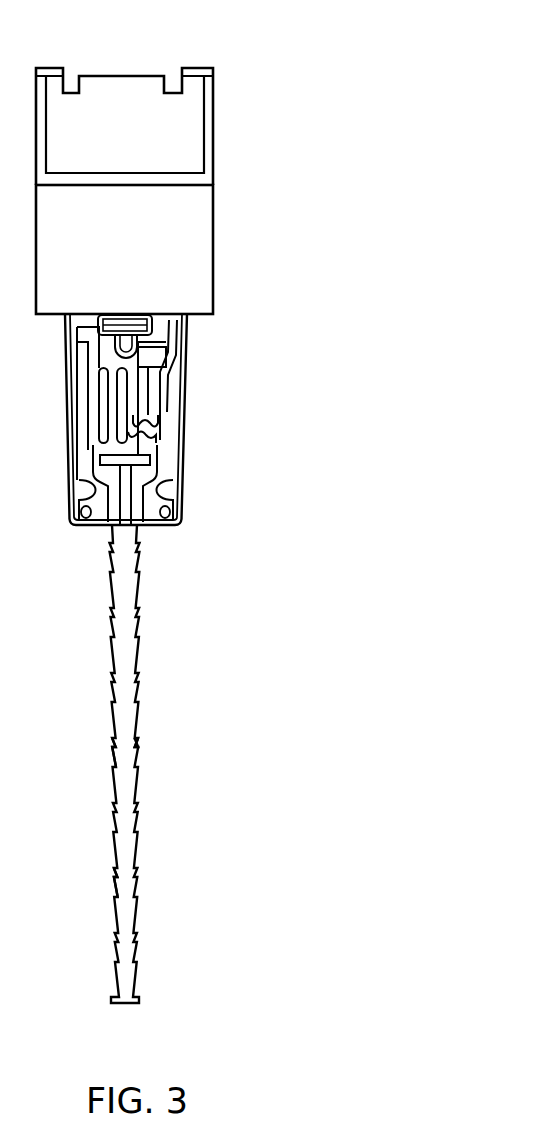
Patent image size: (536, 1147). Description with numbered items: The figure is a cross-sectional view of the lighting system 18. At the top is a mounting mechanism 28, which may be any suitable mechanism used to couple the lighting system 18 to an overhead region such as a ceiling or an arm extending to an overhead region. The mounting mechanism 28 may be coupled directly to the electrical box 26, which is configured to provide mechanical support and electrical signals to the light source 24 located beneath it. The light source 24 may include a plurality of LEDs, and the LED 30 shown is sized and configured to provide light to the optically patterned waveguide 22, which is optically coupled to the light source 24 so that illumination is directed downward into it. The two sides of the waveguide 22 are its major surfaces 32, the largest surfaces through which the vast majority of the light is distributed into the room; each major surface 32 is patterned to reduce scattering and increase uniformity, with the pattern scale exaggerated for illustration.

The lighting system 18 is at (364, 68).
The optically patterned waveguide 22 is at (125, 664).
The light source 24 is at (173, 462).
The electrical box 26 is at (187, 263).
The mounting mechanism 28 is at (187, 145).
The LED 30 is at (135, 412).
The major surfaces 32 is at (146, 766).